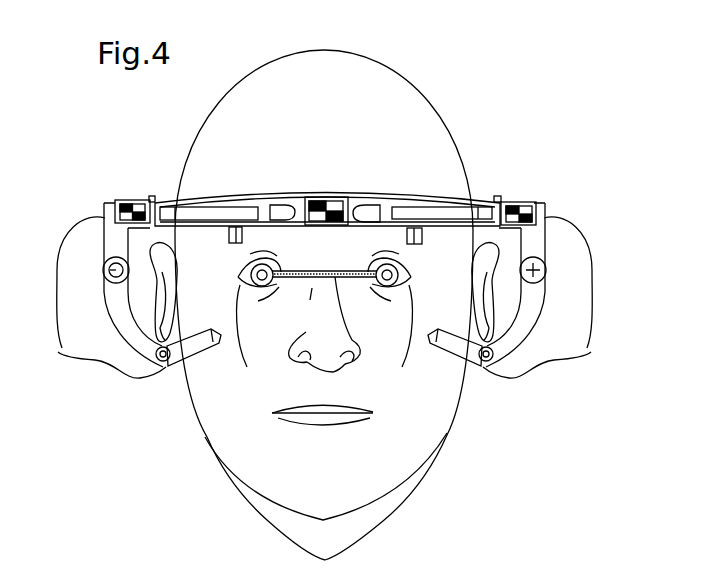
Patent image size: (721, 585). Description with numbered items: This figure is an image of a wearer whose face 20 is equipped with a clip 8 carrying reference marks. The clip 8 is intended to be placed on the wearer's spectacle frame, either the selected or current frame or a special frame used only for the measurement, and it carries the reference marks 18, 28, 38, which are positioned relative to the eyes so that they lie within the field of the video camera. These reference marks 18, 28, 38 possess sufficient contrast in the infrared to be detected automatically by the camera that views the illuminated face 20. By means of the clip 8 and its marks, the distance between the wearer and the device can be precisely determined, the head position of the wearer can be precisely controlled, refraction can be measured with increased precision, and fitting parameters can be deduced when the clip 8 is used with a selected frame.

The clip 8 is at (325, 174).
The reference mark 18 is at (337, 205).
The face 20 is at (228, 440).
The reference mark 28 is at (546, 270).
The reference mark 38 is at (103, 270).